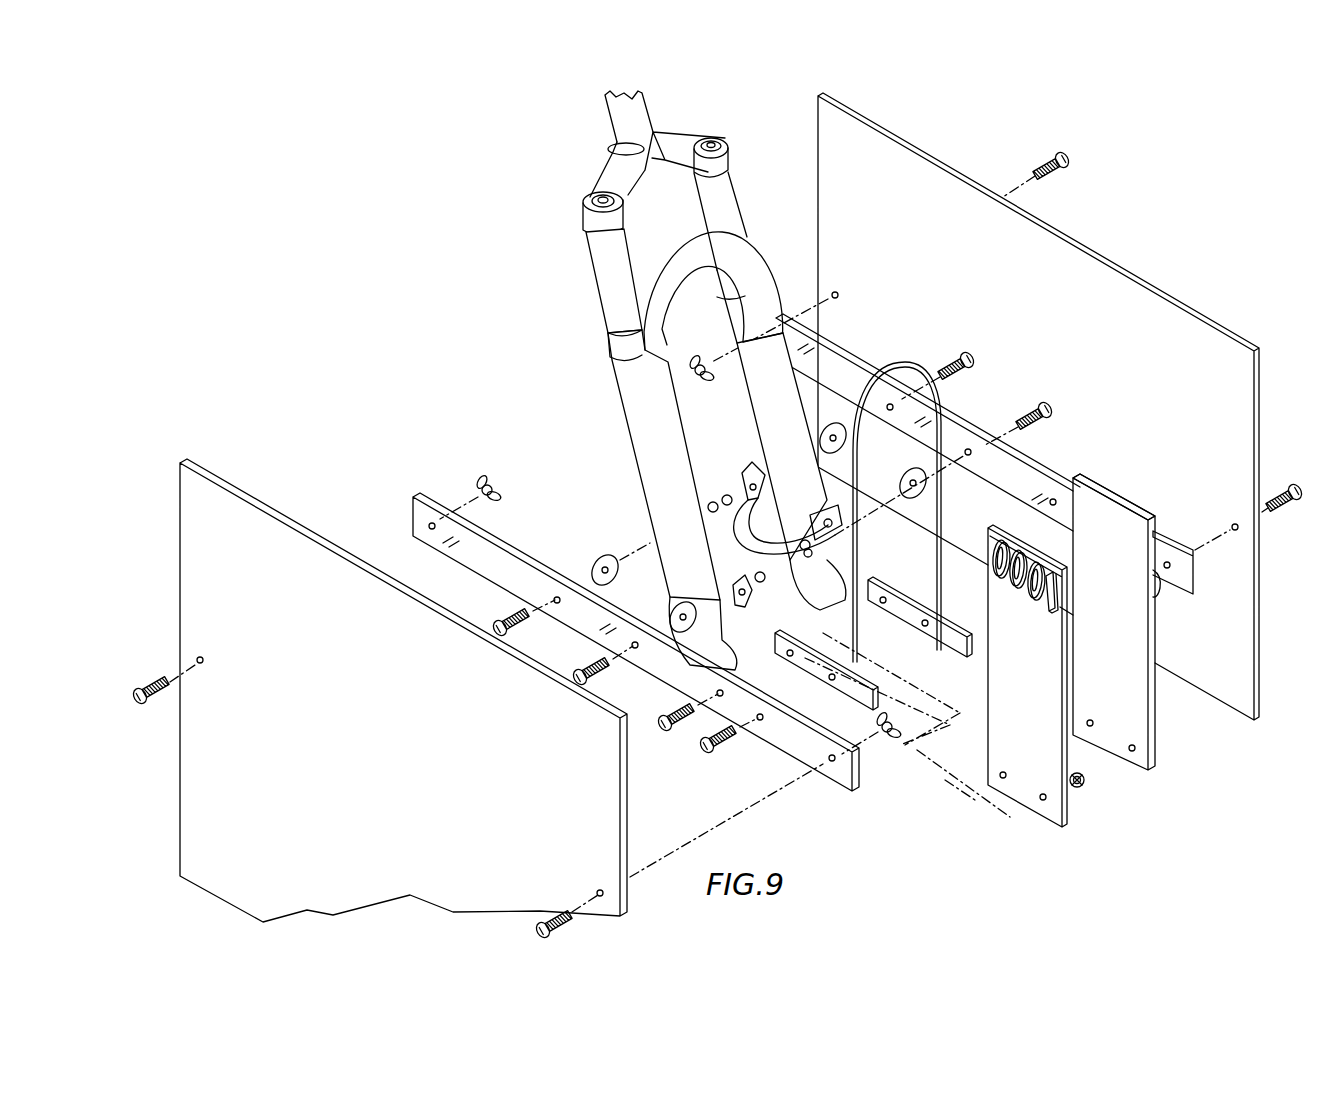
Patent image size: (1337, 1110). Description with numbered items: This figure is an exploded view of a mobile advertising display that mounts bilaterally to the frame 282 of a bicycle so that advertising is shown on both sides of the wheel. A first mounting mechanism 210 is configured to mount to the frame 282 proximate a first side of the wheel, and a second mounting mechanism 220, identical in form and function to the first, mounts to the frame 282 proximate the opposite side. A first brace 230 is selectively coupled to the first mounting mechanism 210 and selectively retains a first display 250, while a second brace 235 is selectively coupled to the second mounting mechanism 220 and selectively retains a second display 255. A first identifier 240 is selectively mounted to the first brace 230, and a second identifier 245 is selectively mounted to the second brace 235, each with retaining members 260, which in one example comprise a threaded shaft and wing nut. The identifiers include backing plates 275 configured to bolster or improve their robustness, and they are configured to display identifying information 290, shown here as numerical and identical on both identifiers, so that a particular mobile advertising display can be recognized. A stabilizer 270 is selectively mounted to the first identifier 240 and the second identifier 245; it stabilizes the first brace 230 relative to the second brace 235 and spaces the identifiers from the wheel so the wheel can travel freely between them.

The first mounting mechanism 210 is at (624, 551).
The second mounting mechanism 220 is at (738, 490).
The first brace 230 is at (415, 497).
The second brace 235 is at (1007, 470).
The first identifier 240 is at (1075, 764).
The second identifier 245 is at (1148, 503).
The first display 250 is at (184, 463).
The second display 255 is at (1243, 360).
The retaining members 260 is at (1041, 157).
The stabilizer 270 is at (927, 367).
The backing plates 275 is at (1056, 805).
The frame 282 is at (735, 192).
The identifying information 290 is at (1117, 492).